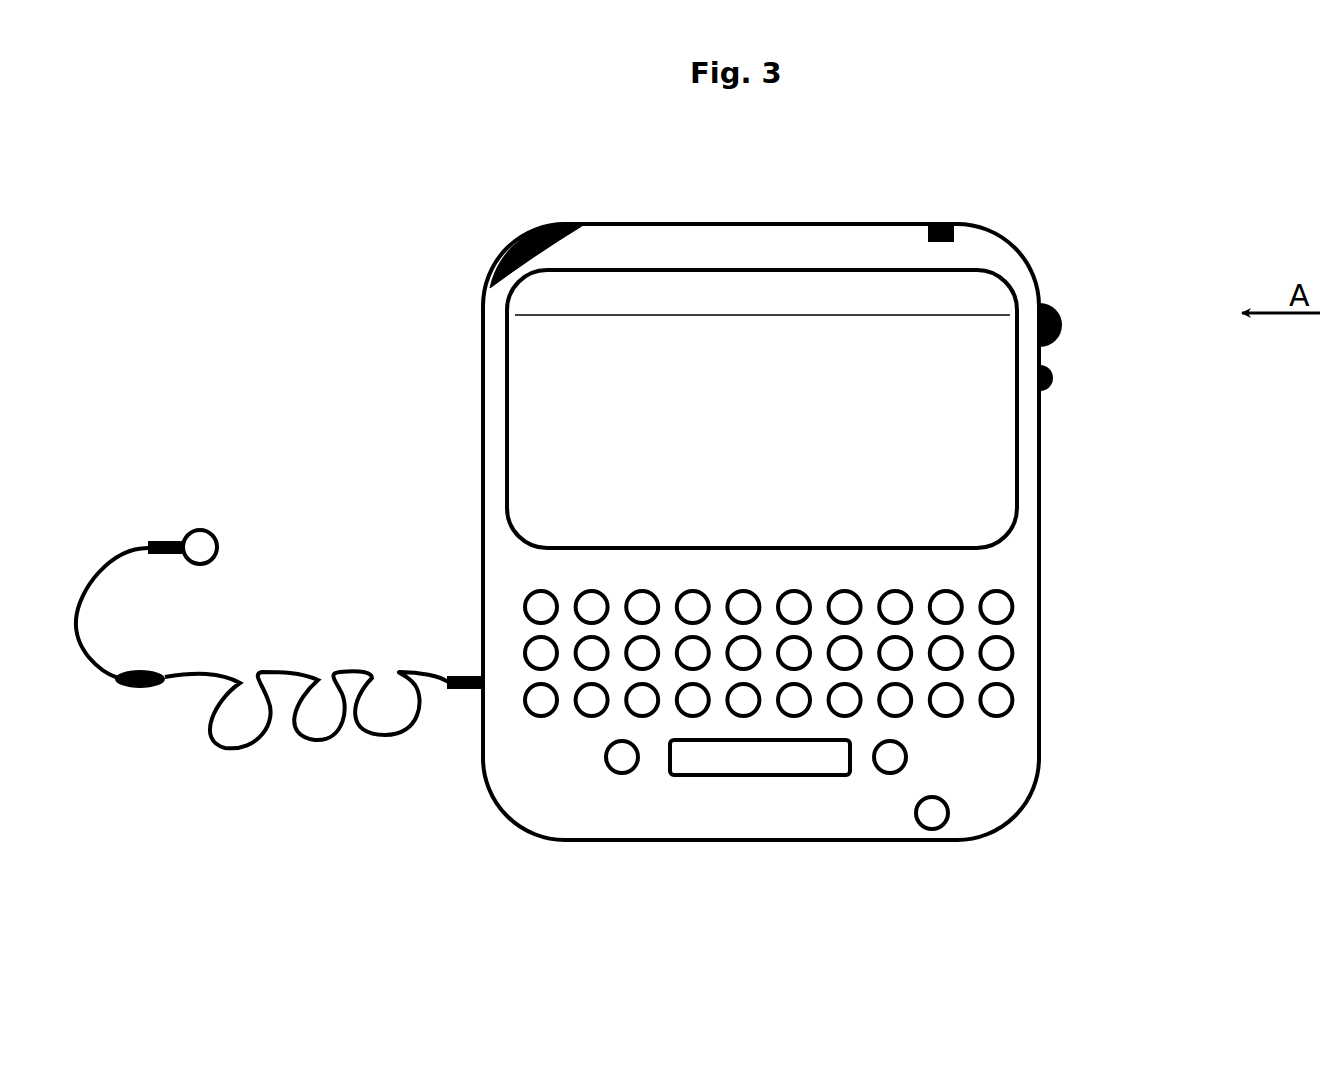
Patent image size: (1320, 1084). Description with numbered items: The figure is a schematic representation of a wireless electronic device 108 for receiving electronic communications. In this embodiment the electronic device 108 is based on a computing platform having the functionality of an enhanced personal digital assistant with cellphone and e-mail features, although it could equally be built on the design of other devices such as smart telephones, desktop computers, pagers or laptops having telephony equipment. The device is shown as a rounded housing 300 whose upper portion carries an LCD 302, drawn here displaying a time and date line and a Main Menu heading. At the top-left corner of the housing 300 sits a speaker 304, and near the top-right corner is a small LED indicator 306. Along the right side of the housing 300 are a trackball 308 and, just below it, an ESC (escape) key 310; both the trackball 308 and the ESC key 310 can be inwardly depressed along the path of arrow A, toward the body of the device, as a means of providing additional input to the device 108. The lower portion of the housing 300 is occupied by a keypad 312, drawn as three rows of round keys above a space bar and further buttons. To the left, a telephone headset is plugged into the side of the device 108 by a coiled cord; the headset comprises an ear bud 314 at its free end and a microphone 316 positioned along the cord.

The electronic device 108 is at (728, 860).
The housing 300 is at (973, 813).
The LCD 302 is at (513, 530).
The speaker 304 is at (510, 248).
The LED indicator 306 is at (954, 232).
The trackball 308 is at (1063, 327).
The ESC key 310 is at (1053, 378).
The keypad 312 is at (1025, 656).
The ear bud 314 is at (233, 543).
The microphone 316 is at (177, 666).